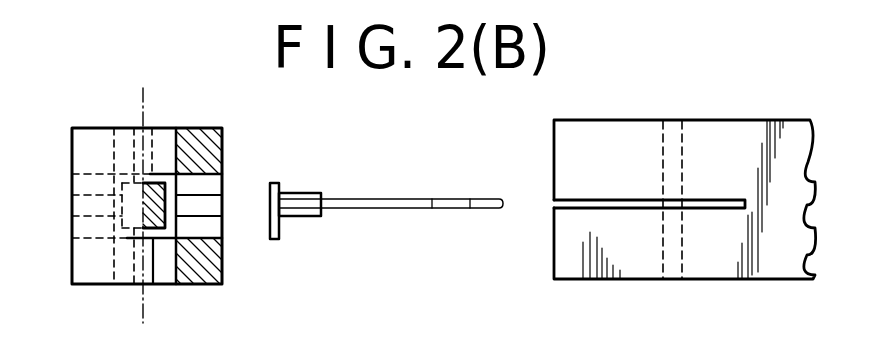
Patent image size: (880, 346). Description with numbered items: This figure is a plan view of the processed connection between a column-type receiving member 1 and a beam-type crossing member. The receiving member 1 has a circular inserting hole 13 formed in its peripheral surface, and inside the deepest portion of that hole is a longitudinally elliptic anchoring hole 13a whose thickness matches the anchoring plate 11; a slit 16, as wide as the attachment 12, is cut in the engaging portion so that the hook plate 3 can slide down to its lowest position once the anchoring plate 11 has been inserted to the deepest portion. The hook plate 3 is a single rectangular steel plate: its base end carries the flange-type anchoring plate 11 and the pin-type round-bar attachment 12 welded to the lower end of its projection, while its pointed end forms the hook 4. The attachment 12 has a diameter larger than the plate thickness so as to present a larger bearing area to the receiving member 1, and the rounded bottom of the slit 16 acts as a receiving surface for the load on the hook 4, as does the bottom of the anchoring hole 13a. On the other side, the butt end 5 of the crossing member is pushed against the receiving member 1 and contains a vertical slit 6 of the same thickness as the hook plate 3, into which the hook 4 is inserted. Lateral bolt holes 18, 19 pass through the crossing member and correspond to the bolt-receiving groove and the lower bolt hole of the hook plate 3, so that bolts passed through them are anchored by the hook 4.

The receiving member 1 is at (72, 128).
The anchoring hole 13a is at (173, 176).
The inserting hole 13 is at (212, 186).
The slit 16 is at (212, 208).
The anchoring plate 11 is at (275, 240).
The attachment 12 is at (305, 193).
The hook plate 3 is at (449, 198).
The hook 4 is at (487, 209).
The butt end 5 is at (554, 153).
The slit 6 is at (607, 201).
The bolt hole 18 is at (722, 224).
The bolt hole 19 is at (682, 233).